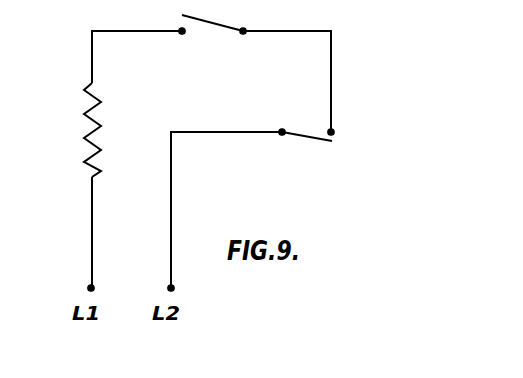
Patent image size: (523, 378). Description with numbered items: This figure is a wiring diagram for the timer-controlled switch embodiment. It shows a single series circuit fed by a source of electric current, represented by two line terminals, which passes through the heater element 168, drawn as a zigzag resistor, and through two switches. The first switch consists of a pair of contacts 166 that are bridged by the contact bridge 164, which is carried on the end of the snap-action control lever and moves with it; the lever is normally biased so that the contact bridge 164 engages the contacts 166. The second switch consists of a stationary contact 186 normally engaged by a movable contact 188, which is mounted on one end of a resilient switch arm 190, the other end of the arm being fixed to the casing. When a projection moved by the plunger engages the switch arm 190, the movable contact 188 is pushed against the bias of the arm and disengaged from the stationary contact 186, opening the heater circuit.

The contact bridge 164 is at (214, 22).
The contacts 166 is at (243, 34).
The heater element 168 is at (83, 138).
The stationary contact 186 is at (334, 132).
The movable contact 188 is at (283, 128).
The resilient switch arm 190 is at (307, 154).